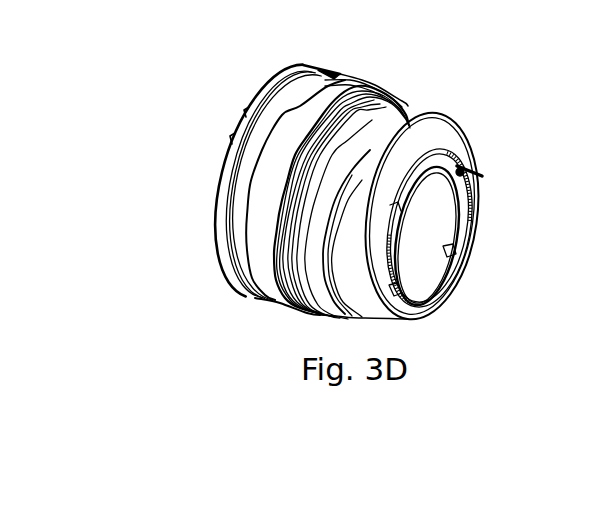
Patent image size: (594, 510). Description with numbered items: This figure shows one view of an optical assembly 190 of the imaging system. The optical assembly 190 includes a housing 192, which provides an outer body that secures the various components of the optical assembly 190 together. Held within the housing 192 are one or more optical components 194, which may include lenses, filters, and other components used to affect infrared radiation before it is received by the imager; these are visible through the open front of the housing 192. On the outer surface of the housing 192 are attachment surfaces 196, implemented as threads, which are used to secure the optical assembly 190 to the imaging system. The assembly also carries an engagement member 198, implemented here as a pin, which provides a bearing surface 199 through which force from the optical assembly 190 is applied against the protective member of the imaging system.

The optical assembly 190 is at (357, 168).
The housing 192 is at (357, 77).
The optical components 194 is at (408, 258).
The attachment surfaces 196 is at (336, 72).
The engagement member 198 is at (478, 170).
The bearing surface 199 is at (457, 187).